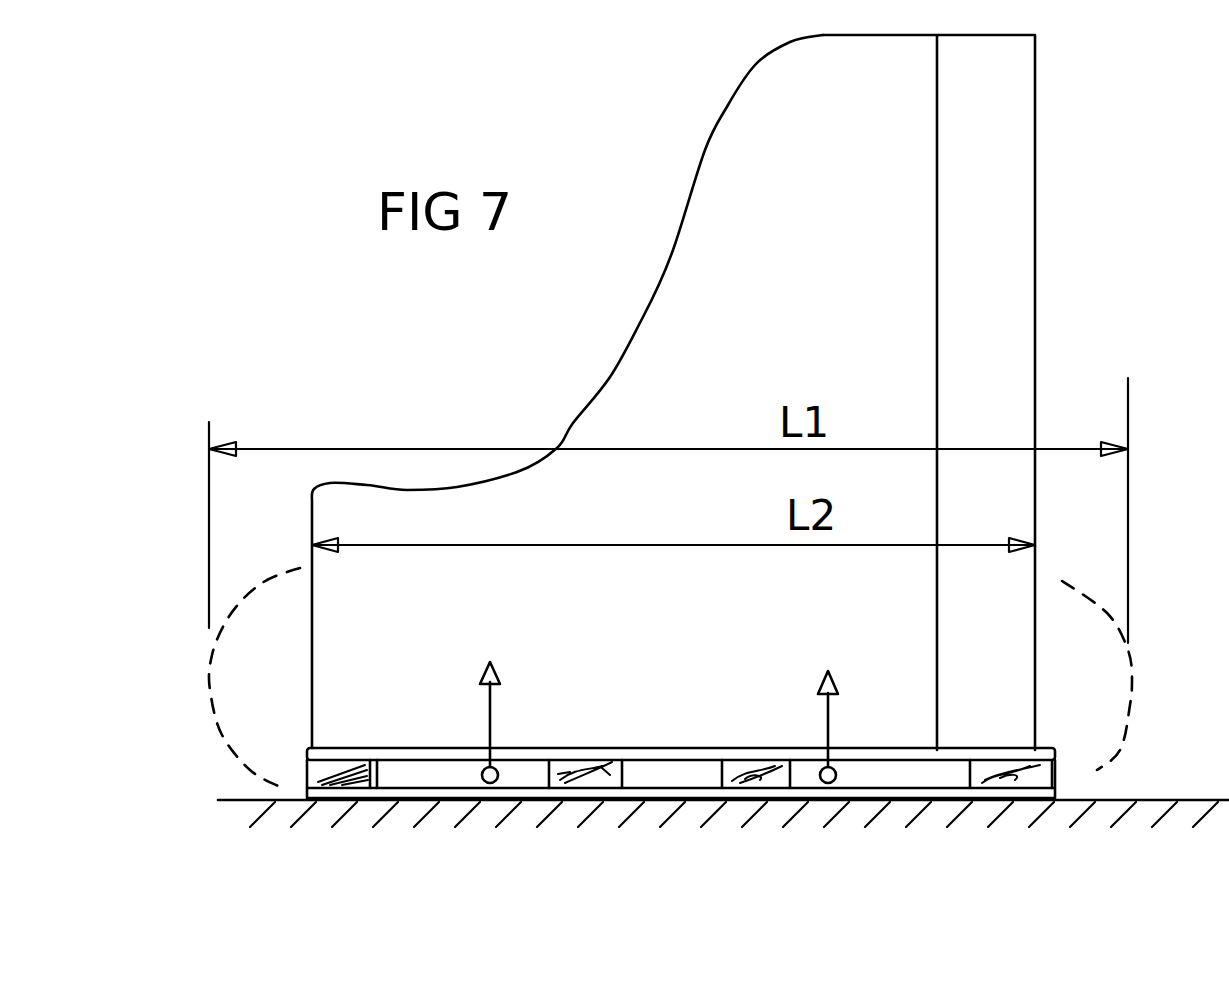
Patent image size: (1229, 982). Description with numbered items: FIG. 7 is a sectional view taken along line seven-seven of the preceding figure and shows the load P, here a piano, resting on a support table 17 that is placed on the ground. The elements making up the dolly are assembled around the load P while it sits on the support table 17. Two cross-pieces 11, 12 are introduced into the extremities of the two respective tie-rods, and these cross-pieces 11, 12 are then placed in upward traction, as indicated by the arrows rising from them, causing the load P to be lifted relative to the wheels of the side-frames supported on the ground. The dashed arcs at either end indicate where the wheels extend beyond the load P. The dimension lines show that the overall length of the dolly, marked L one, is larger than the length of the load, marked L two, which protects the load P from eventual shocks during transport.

The load P is at (1005, 143).
The cross-piece 11 is at (497, 782).
The cross-piece 12 is at (836, 781).
The support table 17 is at (1057, 762).